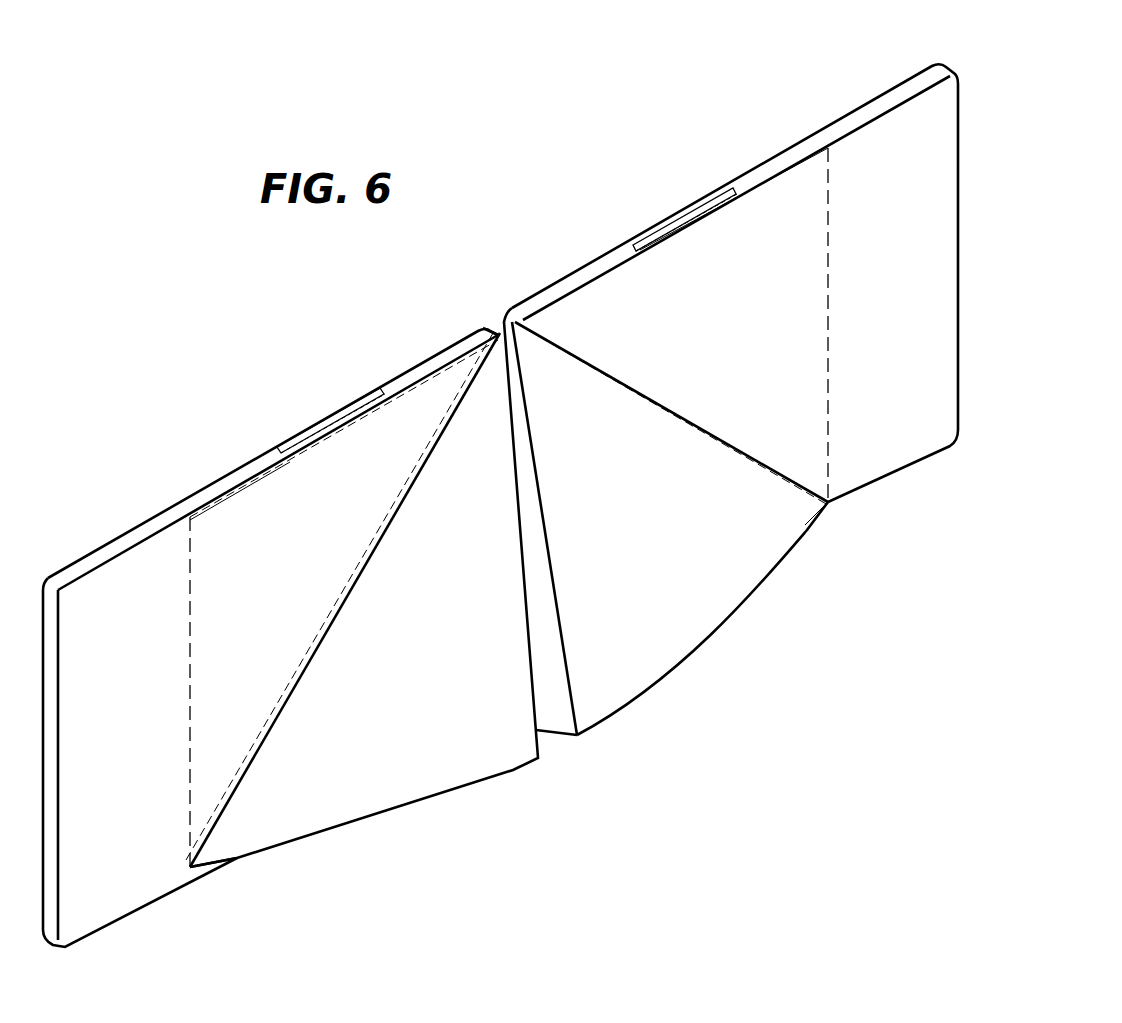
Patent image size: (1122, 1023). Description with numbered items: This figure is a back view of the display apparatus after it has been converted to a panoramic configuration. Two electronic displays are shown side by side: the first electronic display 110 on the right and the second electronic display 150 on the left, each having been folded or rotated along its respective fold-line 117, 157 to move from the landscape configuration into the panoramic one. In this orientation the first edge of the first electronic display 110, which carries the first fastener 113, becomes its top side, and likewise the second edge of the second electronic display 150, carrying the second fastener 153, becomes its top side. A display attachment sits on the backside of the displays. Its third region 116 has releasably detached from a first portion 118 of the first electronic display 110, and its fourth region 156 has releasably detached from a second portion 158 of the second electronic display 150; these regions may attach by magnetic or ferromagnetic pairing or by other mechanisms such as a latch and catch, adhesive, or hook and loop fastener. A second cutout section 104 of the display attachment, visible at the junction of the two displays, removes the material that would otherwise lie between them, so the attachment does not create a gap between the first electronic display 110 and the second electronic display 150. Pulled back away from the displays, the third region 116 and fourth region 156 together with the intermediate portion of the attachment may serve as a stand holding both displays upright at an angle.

The second cutout section 104 is at (480, 298).
The first electronic display 110 is at (936, 110).
The first fastener 113 is at (668, 232).
The third region 116 is at (752, 572).
The fold-line 117 is at (708, 420).
The first portion 118 is at (780, 200).
The second electronic display 150 is at (97, 592).
The second fastener 153 is at (333, 417).
The fourth region 156 is at (414, 788).
The fold-line 157 is at (300, 667).
The second portion 158 is at (295, 517).